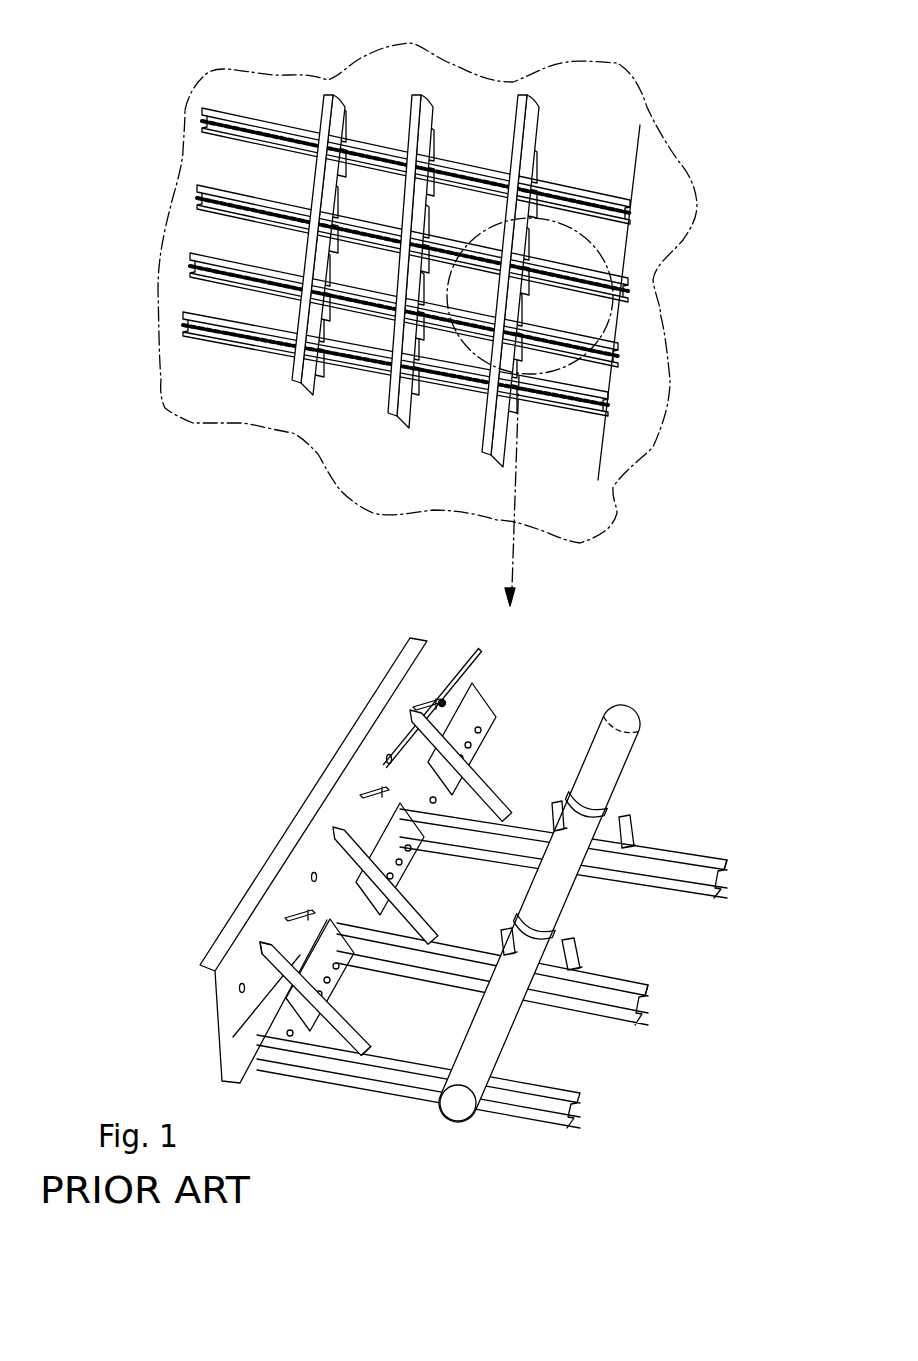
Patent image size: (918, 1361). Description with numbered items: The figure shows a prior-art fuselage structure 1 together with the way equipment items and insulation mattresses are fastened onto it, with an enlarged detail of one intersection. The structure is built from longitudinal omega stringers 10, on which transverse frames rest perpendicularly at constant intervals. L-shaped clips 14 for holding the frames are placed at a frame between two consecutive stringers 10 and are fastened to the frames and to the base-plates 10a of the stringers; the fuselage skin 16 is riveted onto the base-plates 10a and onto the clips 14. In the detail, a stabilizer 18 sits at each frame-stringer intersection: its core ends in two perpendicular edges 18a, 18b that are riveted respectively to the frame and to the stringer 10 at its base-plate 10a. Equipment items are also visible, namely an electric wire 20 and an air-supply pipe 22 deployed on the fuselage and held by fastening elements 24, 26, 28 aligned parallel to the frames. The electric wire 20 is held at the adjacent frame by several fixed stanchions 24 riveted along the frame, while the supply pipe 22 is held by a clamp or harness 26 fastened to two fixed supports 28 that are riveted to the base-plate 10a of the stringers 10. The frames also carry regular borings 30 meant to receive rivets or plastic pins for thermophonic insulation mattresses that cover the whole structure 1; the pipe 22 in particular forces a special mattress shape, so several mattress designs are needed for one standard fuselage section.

The fuselage structure 1 is at (676, 107).
The longitudinal omega stringer 10 is at (202, 118).
The base-plate of the stringer 10a is at (646, 983).
The L-shaped clip 14 is at (330, 355).
The skin 16 is at (588, 100).
The stabilizer 18 is at (343, 1047).
The perpendicular edge of the stabilizer 18a is at (261, 938).
The perpendicular edge of the stabilizer 18b is at (368, 1048).
The electric wire 20 is at (480, 650).
The air-supply pipe 22 is at (630, 754).
The fixed stanchion 24 is at (443, 700).
The clamp or harness 26 is at (554, 922).
The fixed support 28 is at (575, 956).
The boring 30 is at (390, 749).